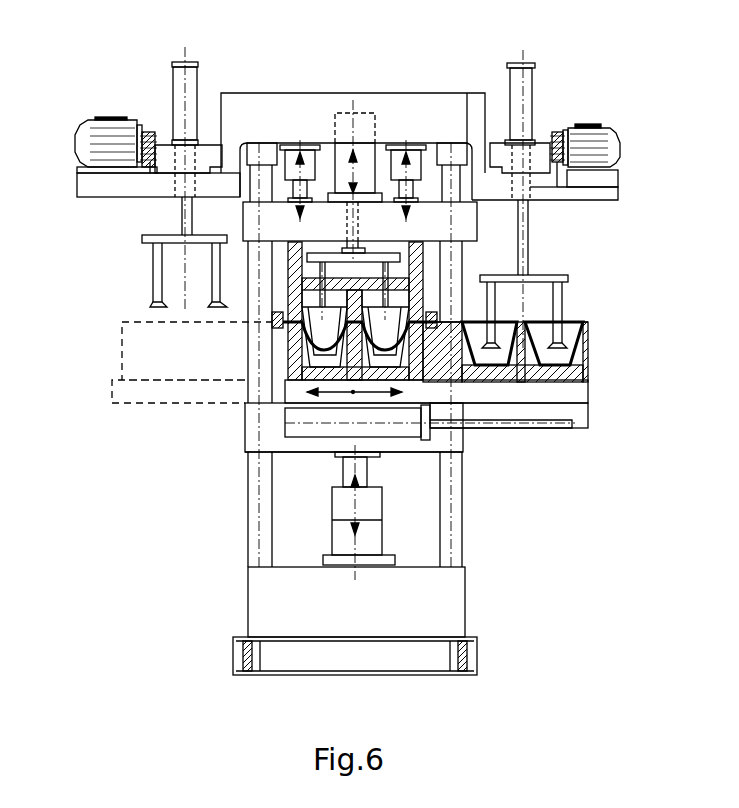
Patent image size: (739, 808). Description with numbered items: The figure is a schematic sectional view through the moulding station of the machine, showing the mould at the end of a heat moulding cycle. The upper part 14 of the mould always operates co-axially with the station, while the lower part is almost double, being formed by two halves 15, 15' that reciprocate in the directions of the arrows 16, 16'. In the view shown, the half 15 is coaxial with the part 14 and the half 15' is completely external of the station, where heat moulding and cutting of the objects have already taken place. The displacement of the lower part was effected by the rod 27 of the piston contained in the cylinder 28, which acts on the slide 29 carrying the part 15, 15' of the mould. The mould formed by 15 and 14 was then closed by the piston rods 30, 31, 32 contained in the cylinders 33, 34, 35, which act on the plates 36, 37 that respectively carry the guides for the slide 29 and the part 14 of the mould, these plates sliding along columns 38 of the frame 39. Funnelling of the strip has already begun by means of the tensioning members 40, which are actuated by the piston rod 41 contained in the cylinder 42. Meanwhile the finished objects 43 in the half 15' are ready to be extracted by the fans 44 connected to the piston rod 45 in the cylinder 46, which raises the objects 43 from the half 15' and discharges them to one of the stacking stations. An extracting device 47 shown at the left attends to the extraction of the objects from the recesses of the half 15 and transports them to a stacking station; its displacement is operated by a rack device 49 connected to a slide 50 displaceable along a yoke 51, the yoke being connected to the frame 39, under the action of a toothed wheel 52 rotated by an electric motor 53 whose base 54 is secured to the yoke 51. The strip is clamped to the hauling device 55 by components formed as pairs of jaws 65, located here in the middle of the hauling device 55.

The mould part 14 is at (290, 290).
The mould half 15 is at (165, 362).
The mould half 15' is at (550, 304).
The arrow 16 is at (380, 431).
The arrow 16' is at (347, 488).
The rod 27 is at (560, 427).
The cylinder 28 is at (407, 428).
The slide 29 is at (582, 412).
The piston rod 30 is at (345, 475).
The piston rod 31 is at (302, 187).
The piston rod 32 is at (412, 183).
The cylinder 33 is at (378, 533).
The cylinder 34 is at (291, 147).
The cylinder 35 is at (422, 173).
The plate 36 is at (250, 452).
The plate 37 is at (247, 230).
The guide columns 38 is at (250, 383).
The frame 39 is at (402, 107).
The tensioning members 40 is at (323, 338).
The piston rod 41 is at (358, 223).
The cylinder 42 is at (368, 147).
The finished objects 43 is at (553, 378).
The fans 44 is at (498, 340).
The piston rod 45 is at (525, 257).
The cylinder 46 is at (188, 78).
The extracting device 47 is at (65, 75).
The rack device 49 is at (143, 167).
The slide 50 is at (168, 160).
The yoke 51 is at (235, 97).
The toothed wheel 52 is at (145, 133).
The electric motor 53 is at (87, 140).
The base 54 is at (78, 173).
The hauling device 55 is at (272, 323).
The pairs of jaws 65 is at (285, 332).